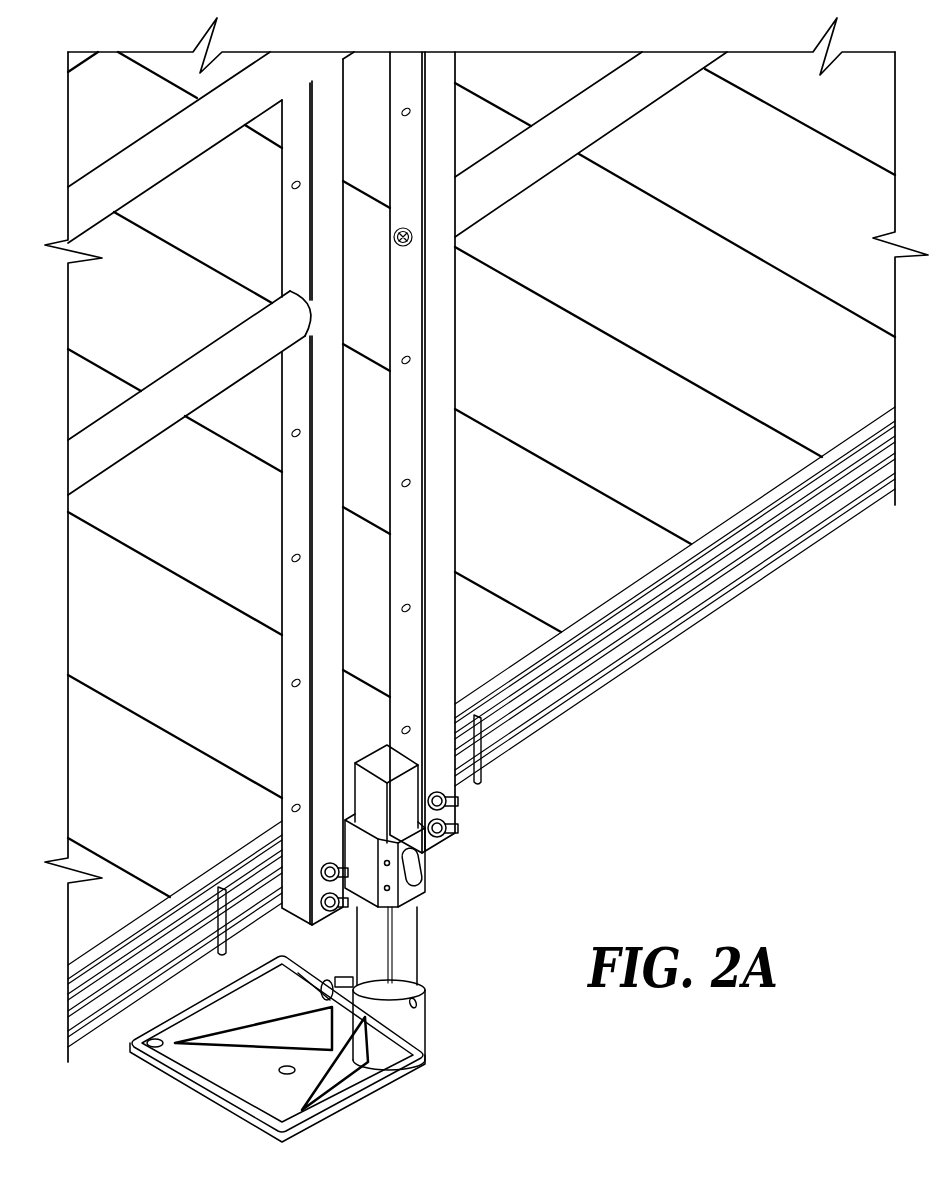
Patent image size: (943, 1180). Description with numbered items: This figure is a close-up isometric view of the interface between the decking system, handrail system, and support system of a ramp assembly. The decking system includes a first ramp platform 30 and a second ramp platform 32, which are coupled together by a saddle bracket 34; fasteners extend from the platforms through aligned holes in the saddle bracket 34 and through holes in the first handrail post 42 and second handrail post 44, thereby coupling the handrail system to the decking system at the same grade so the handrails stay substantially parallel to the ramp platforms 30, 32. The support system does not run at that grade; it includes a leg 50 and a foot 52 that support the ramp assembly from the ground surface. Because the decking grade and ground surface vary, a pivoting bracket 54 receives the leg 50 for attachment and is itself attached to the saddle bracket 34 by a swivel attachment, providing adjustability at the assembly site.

The first ramp platform 30 is at (118, 931).
The second ramp platform 32 is at (563, 618).
The saddle bracket 34 is at (477, 758).
The first handrail post 42 is at (288, 710).
The second handrail post 44 is at (455, 670).
The leg 50 is at (410, 927).
The foot 52 is at (228, 1073).
The pivoting bracket 54 is at (425, 865).